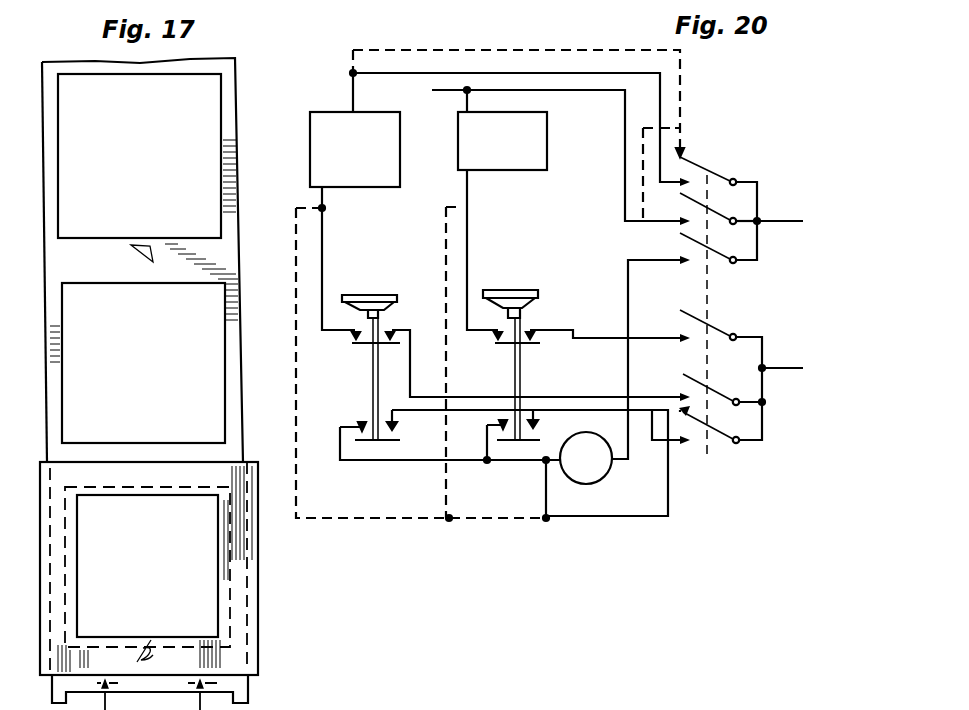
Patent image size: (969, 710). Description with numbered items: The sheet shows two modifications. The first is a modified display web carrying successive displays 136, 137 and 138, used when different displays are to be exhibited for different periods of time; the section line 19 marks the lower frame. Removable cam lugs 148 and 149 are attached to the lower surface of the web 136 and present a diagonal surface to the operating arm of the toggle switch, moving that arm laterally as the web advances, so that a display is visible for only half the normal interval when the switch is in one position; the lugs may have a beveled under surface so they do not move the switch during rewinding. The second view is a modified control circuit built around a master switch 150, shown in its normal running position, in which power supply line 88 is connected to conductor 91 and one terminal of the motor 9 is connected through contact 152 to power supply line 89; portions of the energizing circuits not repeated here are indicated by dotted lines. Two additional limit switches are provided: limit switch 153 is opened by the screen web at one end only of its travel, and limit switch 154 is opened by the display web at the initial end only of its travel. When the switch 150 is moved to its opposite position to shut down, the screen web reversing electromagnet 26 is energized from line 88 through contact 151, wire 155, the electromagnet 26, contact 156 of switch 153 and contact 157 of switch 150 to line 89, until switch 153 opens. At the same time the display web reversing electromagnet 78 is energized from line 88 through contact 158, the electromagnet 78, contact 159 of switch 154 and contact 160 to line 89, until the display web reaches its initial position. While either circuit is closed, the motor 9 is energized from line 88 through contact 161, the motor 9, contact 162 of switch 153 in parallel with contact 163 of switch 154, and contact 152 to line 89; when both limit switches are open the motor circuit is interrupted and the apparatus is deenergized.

In FIG. 17, the display 138 is at (70, 190).
In FIG. 17, the display 137 is at (70, 334).
In FIG. 17, the removable cam lug 149 is at (153, 262).
In FIG. 17, the display 136 is at (206, 578).
In FIG. 17, the removable cam lug 148 is at (142, 646).
In FIG. 17, the section line 19 is at (153, 695).
In FIG. 20, the wire 155 is at (530, 72).
In FIG. 20, the screen web reversing electromagnet 26 is at (400, 147).
In FIG. 20, the display web reversing electromagnet 78 is at (548, 148).
In FIG. 20, the conductor 91 is at (684, 142).
In FIG. 20, the contact 151 is at (700, 167).
In FIG. 20, the contact 158 is at (706, 207).
In FIG. 20, the power supply line 88 is at (796, 210).
In FIG. 20, the contact 161 is at (719, 254).
In FIG. 20, the contact 160 is at (712, 331).
In FIG. 20, the contact 157 is at (721, 395).
In FIG. 20, the power supply line 89 is at (780, 368).
In FIG. 20, the contact 152 is at (722, 437).
In FIG. 20, the master switch 150 is at (721, 448).
In FIG. 20, the limit switch 153 is at (360, 366).
In FIG. 20, the contact 156 is at (393, 346).
In FIG. 20, the limit switch 154 is at (506, 358).
In FIG. 20, the contact 159 is at (528, 345).
In FIG. 20, the contact 162 is at (395, 441).
In FIG. 20, the contact 163 is at (511, 444).
In FIG. 20, the motor 9 is at (588, 478).